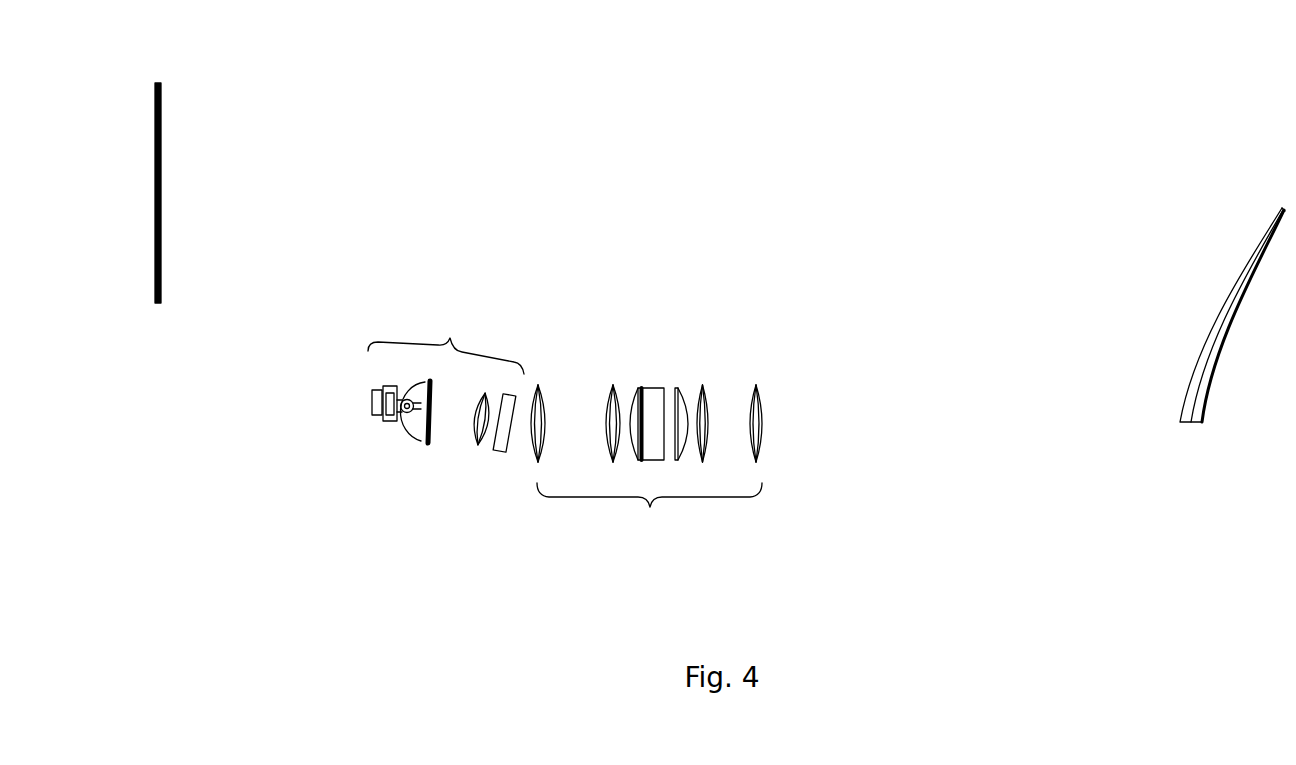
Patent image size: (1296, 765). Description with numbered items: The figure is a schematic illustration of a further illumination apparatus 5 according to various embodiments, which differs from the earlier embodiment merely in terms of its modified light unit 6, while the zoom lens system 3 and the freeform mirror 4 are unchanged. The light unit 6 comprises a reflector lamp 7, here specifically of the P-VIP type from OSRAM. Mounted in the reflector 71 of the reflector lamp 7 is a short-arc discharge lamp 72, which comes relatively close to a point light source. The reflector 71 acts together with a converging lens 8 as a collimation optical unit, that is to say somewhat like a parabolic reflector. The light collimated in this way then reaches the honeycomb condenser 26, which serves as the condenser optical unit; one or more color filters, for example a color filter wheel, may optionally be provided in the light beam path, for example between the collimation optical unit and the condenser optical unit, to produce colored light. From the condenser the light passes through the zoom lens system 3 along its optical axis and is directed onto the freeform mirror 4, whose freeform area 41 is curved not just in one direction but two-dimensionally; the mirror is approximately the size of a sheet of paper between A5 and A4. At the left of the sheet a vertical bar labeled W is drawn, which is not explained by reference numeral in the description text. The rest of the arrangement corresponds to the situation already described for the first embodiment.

The windshield / target wall W is at (159, 118).
The illumination apparatus 5 is at (679, 212).
The light unit 6 is at (446, 343).
The reflector lamp 7 is at (356, 476).
The reflector 71 is at (415, 438).
The short-arc discharge lamp 72 is at (399, 422).
The converging lens 8 is at (478, 445).
The honeycomb condenser 26 is at (500, 452).
The zoom lens system 3 is at (646, 462).
The freeform mirror 4 is at (1220, 368).
The freeform area 41 is at (1222, 284).